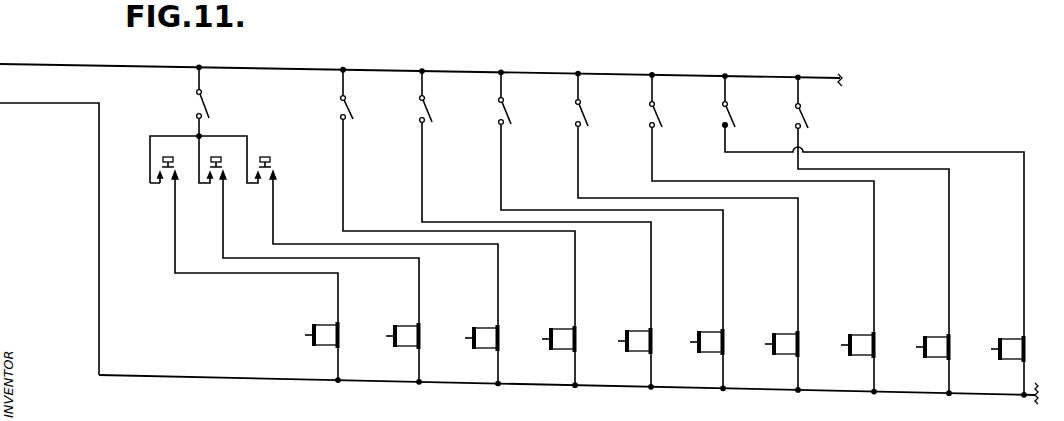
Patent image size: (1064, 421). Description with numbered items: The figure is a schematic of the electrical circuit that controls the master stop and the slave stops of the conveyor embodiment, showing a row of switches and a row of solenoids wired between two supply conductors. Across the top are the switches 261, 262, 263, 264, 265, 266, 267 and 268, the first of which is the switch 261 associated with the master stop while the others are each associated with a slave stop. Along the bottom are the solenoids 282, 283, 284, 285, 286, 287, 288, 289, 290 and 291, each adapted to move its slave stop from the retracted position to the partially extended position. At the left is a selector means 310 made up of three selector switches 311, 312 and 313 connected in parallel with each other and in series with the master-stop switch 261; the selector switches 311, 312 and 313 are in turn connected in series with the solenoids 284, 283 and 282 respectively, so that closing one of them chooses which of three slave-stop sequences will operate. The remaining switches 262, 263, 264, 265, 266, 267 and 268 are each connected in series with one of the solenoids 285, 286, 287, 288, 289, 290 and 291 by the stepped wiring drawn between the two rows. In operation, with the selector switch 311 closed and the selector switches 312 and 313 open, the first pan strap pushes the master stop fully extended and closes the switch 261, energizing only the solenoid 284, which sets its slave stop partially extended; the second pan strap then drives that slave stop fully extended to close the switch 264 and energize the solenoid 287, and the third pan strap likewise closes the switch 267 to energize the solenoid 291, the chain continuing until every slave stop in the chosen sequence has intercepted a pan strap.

The switch 261 is at (207, 103).
The switch 262 is at (351, 109).
The switch 263 is at (430, 109).
The switch 264 is at (509, 111).
The switch 265 is at (586, 113).
The switch 266 is at (660, 115).
The switch 267 is at (733, 115).
The switch 268 is at (805, 113).
The solenoid 282 is at (320, 325).
The solenoid 283 is at (401, 326).
The solenoid 284 is at (480, 328).
The solenoid 285 is at (557, 329).
The solenoid 286 is at (633, 331).
The solenoid 287 is at (705, 318).
The solenoid 288 is at (780, 322).
The solenoid 289 is at (856, 335).
The solenoid 290 is at (931, 337).
The solenoid 291 is at (1006, 339).
The selector means 310 is at (165, 189).
The selector switch 311 is at (270, 158).
The selector switch 312 is at (218, 157).
The selector switch 313 is at (167, 156).